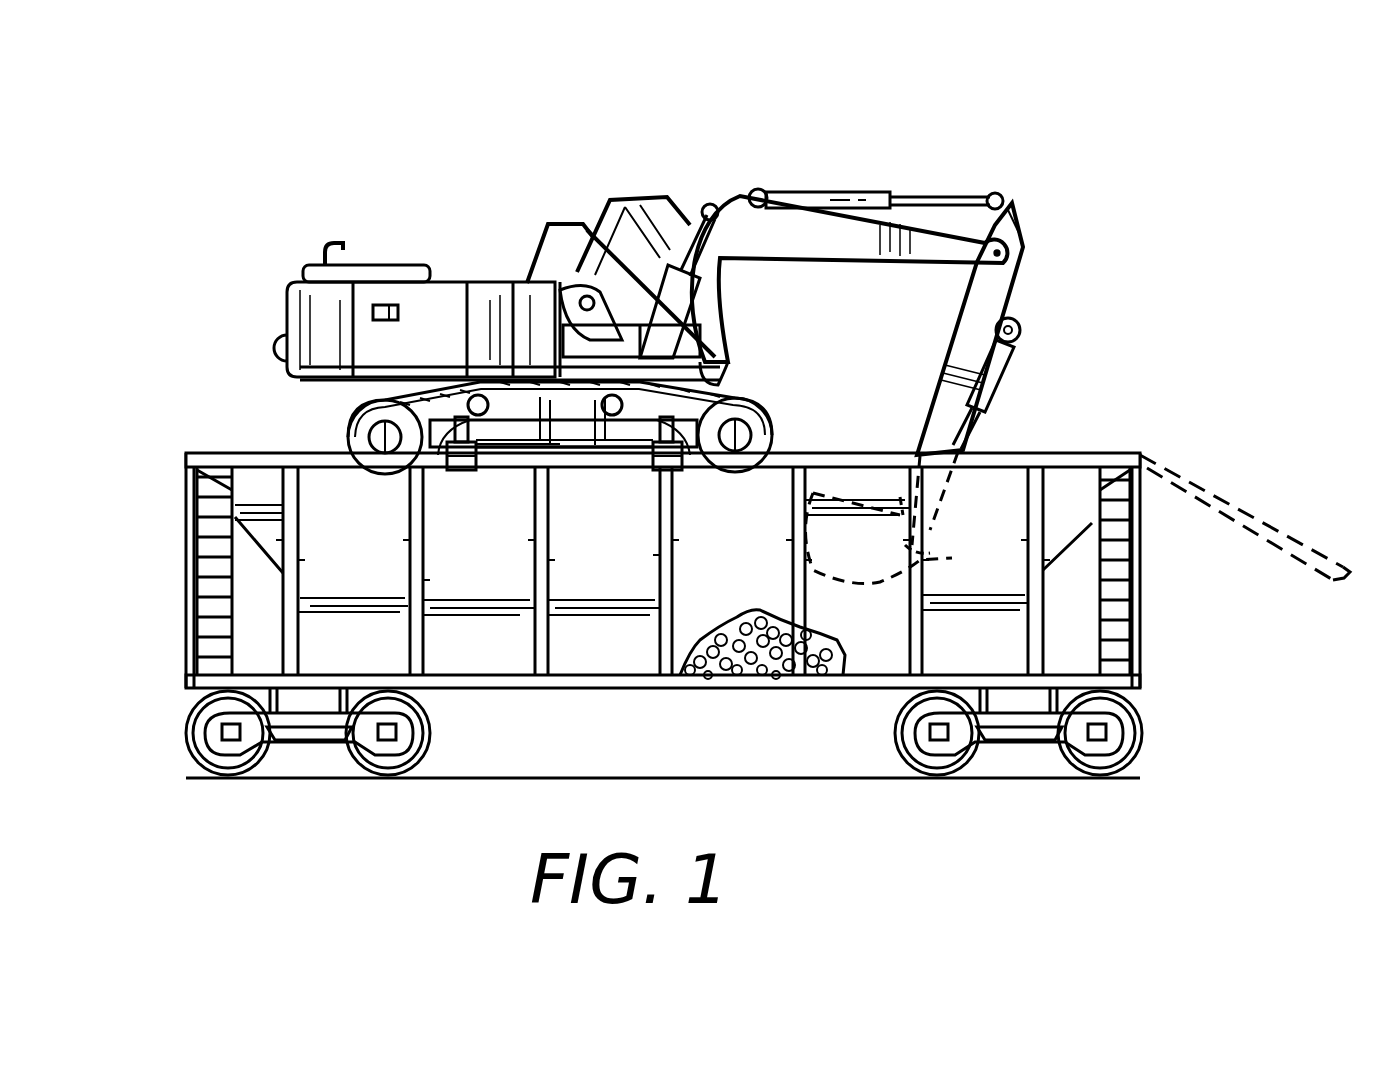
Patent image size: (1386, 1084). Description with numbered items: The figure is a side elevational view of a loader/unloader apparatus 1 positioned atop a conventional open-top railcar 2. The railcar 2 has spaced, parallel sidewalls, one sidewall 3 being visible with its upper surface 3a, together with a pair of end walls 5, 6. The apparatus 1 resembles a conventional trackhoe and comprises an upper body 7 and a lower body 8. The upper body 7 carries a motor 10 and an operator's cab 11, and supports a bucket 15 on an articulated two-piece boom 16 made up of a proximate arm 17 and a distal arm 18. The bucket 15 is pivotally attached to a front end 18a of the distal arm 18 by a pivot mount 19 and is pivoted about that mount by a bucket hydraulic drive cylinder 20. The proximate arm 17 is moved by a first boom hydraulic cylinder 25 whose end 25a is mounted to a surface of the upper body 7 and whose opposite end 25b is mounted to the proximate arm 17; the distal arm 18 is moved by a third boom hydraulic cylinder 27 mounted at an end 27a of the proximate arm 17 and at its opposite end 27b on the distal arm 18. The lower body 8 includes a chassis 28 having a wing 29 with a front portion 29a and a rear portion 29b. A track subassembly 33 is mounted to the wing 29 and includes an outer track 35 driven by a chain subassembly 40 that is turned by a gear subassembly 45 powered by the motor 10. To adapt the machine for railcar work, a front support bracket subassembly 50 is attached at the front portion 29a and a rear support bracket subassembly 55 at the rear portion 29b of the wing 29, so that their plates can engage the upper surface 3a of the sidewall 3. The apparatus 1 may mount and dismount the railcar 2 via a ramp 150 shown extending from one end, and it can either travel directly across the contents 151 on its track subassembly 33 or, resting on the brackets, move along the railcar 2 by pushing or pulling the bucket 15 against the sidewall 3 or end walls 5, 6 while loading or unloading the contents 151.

The loader/unloader apparatus 1 is at (385, 212).
The railcar 2 is at (172, 398).
The sidewall 3 is at (352, 565).
The upper surface 3a is at (262, 452).
The end wall 5 is at (1150, 458).
The end wall 6 is at (186, 460).
The upper body 7 is at (278, 303).
The lower body 8 is at (340, 420).
The motor 10 is at (400, 265).
The operator's cab 11 is at (607, 205).
The bucket 15 is at (878, 582).
The articulated two-piece boom 16 is at (966, 150).
The proximate arm 17 is at (740, 217).
The distal arm 18 is at (973, 332).
The front end 18a is at (898, 497).
The pivot mount 19 is at (925, 556).
The bucket hydraulic drive cylinder 20 is at (983, 393).
The first boom hydraulic cylinder 25 is at (697, 223).
The end 25a is at (642, 346).
The opposite end 25b is at (728, 246).
The third boom hydraulic cylinder 27 is at (861, 196).
The end 27a is at (760, 197).
The opposite end 27b is at (1002, 200).
The chassis 28 is at (550, 417).
The wing 29 is at (590, 447).
The front portion 29a is at (600, 447).
The rear portion 29b is at (480, 430).
The track subassembly 33 is at (340, 441).
The outer track 35 is at (783, 437).
The chain subassembly 40 is at (716, 390).
The gear subassembly 45 is at (400, 455).
The front support bracket subassembly 50 is at (682, 474).
The rear support bracket subassembly 55 is at (462, 478).
The ramp 150 is at (1298, 533).
The contents 151 is at (777, 605).